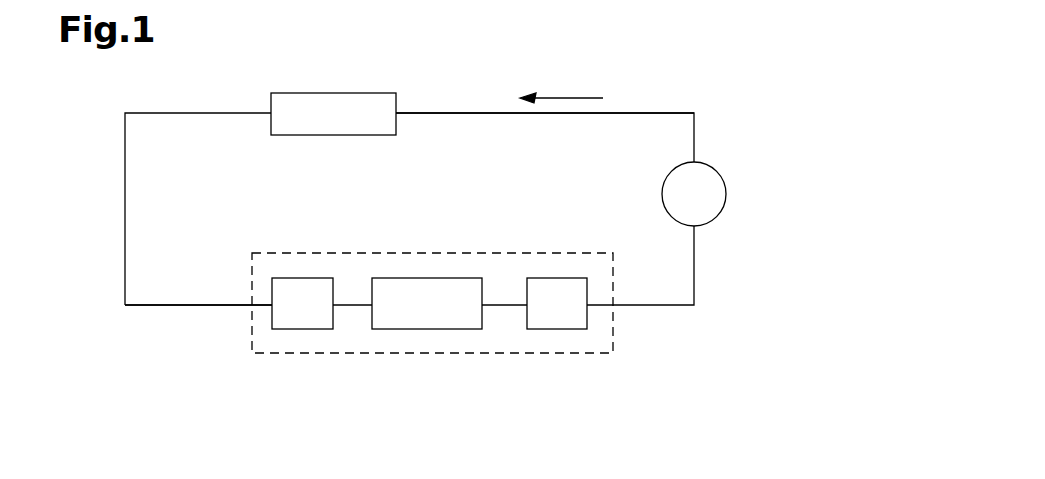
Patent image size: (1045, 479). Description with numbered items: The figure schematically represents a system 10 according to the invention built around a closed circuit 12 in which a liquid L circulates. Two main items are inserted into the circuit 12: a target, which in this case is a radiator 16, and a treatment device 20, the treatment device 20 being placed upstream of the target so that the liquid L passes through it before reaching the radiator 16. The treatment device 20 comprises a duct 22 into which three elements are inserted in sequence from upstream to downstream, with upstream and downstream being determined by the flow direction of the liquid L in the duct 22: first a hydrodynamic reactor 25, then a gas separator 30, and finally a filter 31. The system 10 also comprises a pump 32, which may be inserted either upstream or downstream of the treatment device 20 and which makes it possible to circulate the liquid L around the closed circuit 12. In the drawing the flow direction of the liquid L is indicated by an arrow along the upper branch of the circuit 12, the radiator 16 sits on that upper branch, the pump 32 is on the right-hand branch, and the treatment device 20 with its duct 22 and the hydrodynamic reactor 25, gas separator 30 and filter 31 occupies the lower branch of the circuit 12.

The system 10 is at (668, 88).
The closed circuit 12 is at (462, 113).
The radiator 16 is at (318, 110).
The treatment device 20 is at (385, 355).
The duct 22 is at (270, 305).
The hydrodynamic reactor 25 is at (296, 310).
The gas separator 30 is at (449, 312).
The filter 31 is at (560, 318).
The pump 32 is at (707, 187).
The liquid L is at (561, 84).